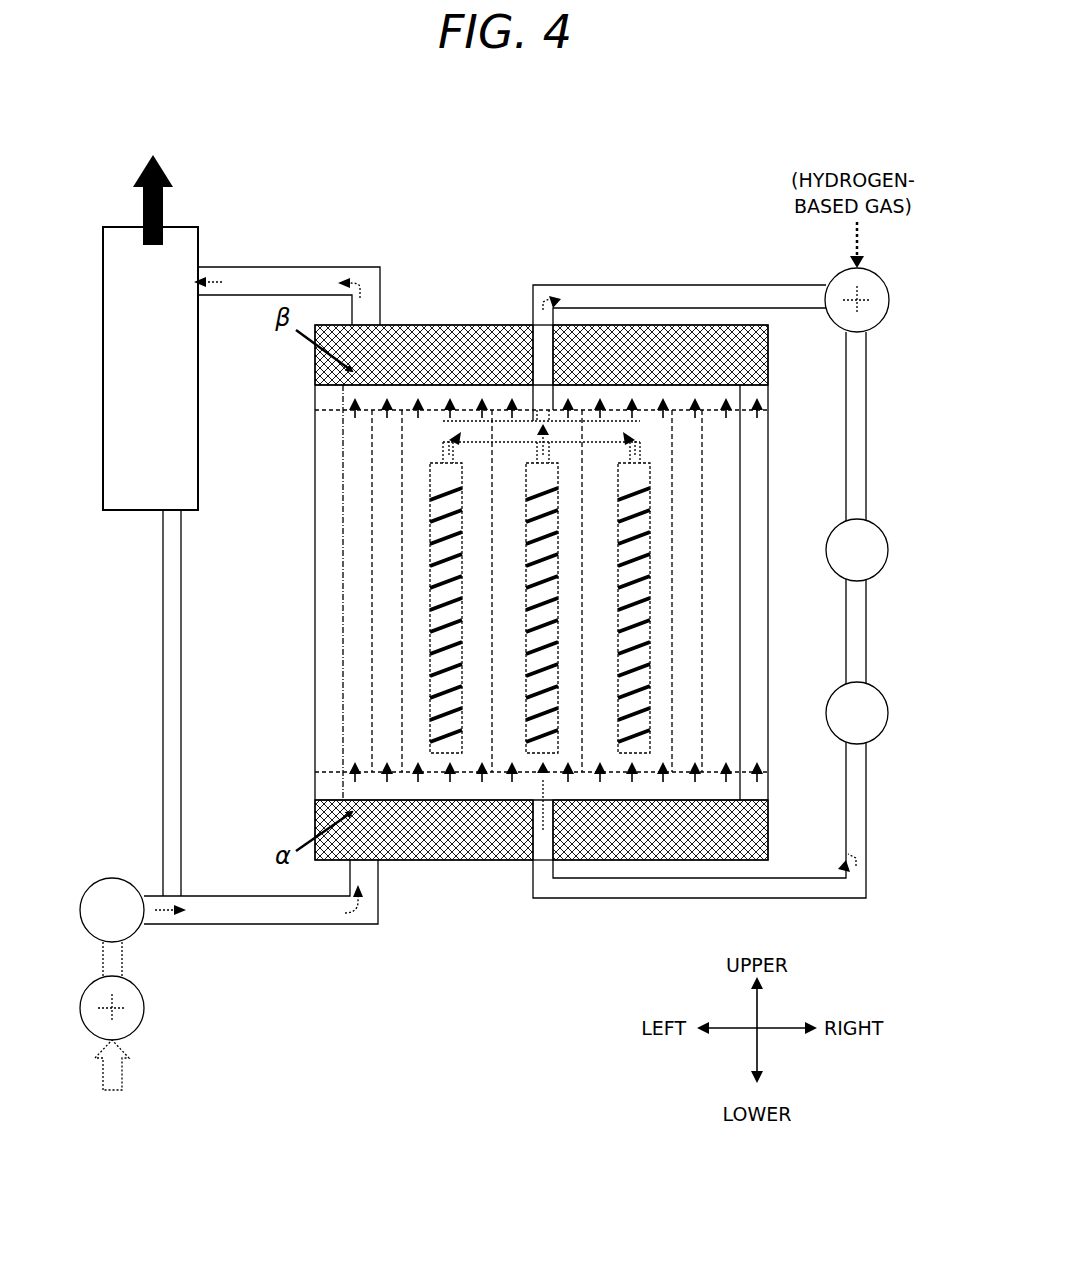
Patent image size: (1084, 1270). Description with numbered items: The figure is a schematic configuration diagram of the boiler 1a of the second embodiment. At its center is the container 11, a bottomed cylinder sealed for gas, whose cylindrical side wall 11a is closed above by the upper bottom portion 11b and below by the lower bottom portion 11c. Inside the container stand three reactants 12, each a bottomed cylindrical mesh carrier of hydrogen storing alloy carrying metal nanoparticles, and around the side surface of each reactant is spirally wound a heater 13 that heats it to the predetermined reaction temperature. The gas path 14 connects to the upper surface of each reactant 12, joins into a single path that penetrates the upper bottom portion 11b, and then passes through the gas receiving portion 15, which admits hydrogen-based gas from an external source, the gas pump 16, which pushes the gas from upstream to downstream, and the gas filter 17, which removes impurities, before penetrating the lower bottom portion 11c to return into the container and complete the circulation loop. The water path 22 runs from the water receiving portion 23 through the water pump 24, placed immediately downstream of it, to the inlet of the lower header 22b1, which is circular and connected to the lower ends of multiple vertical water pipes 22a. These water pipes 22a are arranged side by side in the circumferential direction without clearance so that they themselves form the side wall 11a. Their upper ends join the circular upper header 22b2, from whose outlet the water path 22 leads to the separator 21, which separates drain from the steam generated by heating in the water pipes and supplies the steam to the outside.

The boiler 1a is at (876, 139).
The container 11 is at (572, 585).
The side wall 11a is at (780, 492).
The upper bottom portion 11b is at (487, 322).
The lower bottom portion 11c is at (510, 862).
The reactant 12 is at (522, 705).
The heater 13 is at (453, 745).
The gas path 14 is at (637, 287).
The gas receiving portion 15 is at (832, 325).
The gas pump 16 is at (882, 525).
The gas filter 17 is at (880, 690).
The separator 21 is at (136, 515).
The water path 22 is at (262, 598).
The water pipe 22a is at (372, 632).
The lower header 22b1 is at (372, 760).
The upper header 22b2 is at (377, 418).
The water receiving portion 23 is at (142, 1018).
The water pump 24 is at (115, 878).